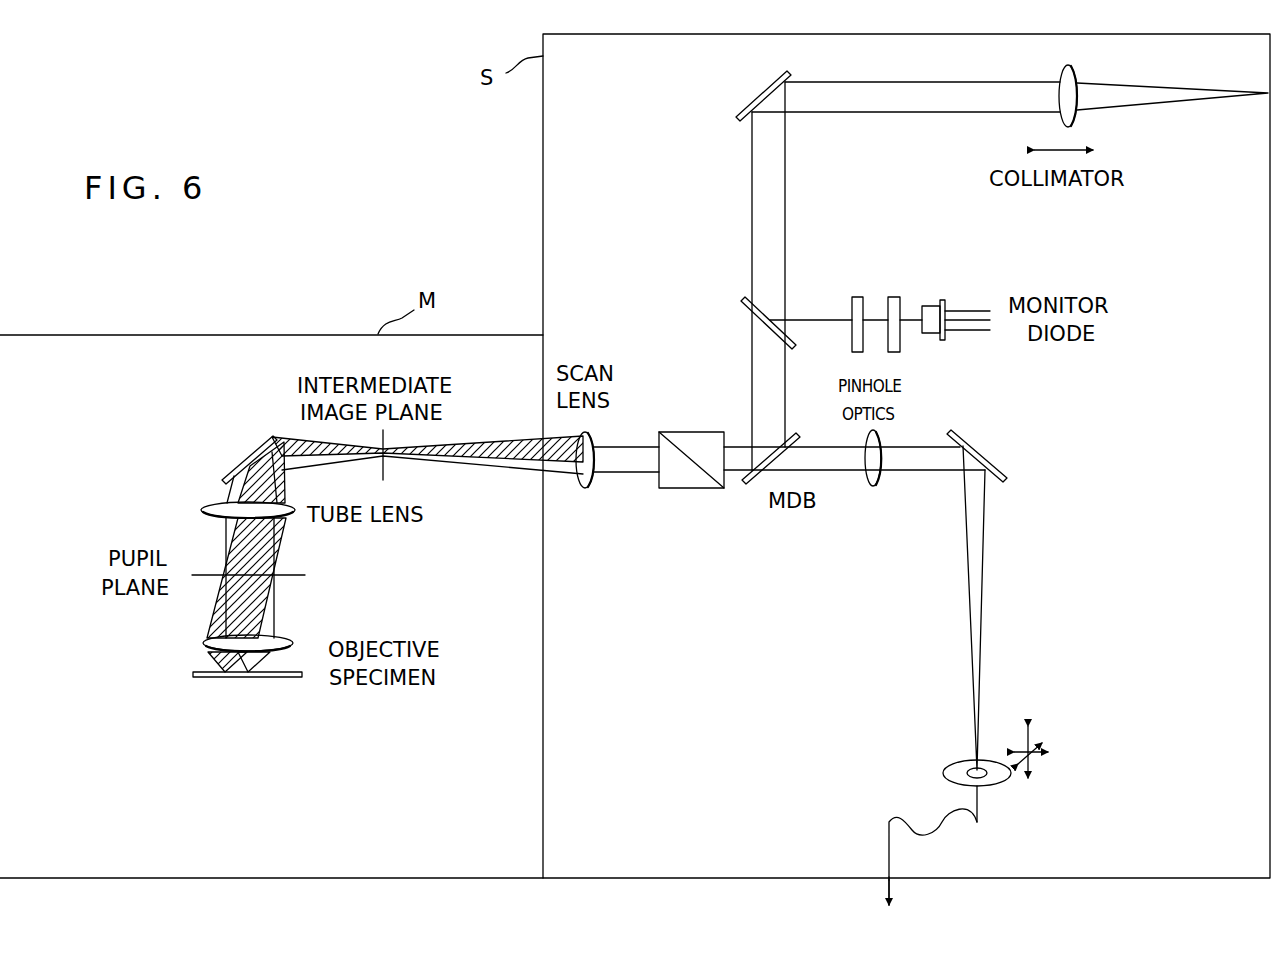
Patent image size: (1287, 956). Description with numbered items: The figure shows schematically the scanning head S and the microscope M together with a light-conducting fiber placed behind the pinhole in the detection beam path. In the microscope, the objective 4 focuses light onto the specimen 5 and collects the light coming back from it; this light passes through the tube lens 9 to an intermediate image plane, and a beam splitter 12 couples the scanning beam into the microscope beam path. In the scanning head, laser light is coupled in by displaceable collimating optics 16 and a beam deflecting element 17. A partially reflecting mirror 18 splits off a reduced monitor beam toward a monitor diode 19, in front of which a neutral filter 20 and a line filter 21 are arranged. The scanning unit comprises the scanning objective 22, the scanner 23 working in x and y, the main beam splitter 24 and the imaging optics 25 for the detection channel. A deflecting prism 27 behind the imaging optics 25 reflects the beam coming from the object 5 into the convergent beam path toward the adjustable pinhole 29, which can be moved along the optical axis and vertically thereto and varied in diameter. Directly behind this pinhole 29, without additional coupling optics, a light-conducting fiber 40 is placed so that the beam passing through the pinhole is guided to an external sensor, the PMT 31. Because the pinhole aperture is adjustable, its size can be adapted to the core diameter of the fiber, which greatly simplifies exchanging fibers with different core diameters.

The objective 4 is at (290, 634).
The specimen 5 is at (200, 680).
The tube lens 9 is at (205, 508).
The beam splitter 12 is at (232, 470).
The collimating optics 16 is at (1078, 82).
The beam deflecting element 17 is at (745, 107).
The partially reflecting mirror 18 is at (740, 314).
The monitor diode 19 is at (930, 335).
The neutral filter 20 is at (902, 302).
The line filter 21 is at (850, 300).
The scanning objective 22 is at (590, 486).
The scanner 23 is at (688, 490).
The main beam splitter 24 is at (790, 432).
The imaging optics 25 is at (879, 486).
The deflecting prism 27 is at (986, 458).
The adjustable pinhole 29 is at (944, 773).
The PMT 31 is at (890, 882).
The light-conducting fiber 40 is at (889, 856).